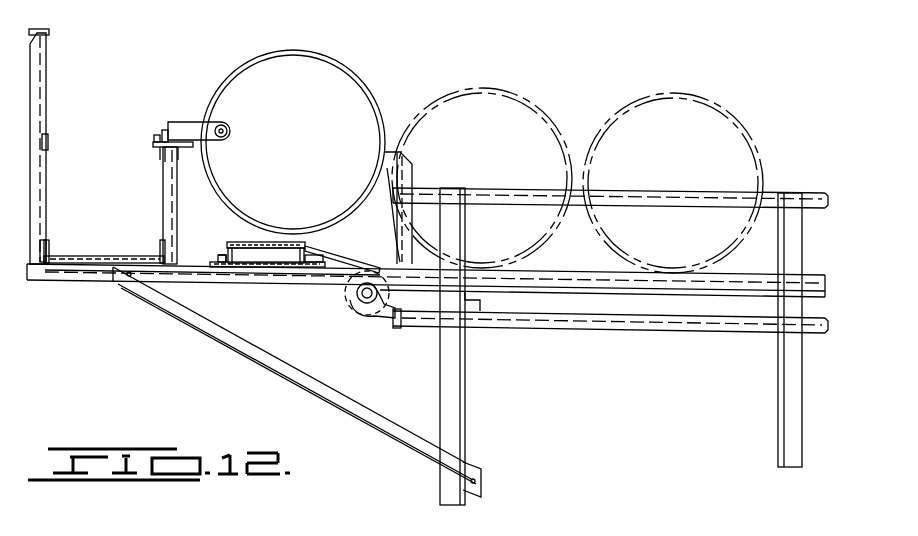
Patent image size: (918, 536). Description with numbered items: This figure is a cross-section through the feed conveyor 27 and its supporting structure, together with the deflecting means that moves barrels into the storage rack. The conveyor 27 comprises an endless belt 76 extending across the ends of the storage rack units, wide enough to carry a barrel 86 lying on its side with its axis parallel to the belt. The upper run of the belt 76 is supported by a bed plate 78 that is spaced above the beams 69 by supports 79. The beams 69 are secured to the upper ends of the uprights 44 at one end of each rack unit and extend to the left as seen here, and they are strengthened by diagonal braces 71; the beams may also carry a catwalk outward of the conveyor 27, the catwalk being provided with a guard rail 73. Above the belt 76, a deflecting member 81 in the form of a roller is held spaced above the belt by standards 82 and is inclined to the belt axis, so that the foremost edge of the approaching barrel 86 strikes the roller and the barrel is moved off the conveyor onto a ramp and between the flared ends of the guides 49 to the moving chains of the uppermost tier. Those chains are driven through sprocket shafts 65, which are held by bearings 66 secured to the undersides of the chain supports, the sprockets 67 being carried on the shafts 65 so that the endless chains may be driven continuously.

The feed conveyor 27 is at (276, 254).
The uprights 44 is at (455, 385).
The guides 49 is at (668, 192).
The sprocket shafts 65 is at (367, 305).
The bearings 66 is at (358, 302).
The sprockets 67 is at (396, 312).
The beams 69 is at (218, 277).
The diagonal braces 71 is at (296, 380).
The guard rail 73 is at (50, 40).
The endless belt 76 is at (93, 254).
The bed plate 78 is at (262, 248).
The supports 79 is at (312, 250).
The deflecting members 81 is at (192, 122).
The standards 82 is at (164, 195).
The barrel 86 is at (355, 100).